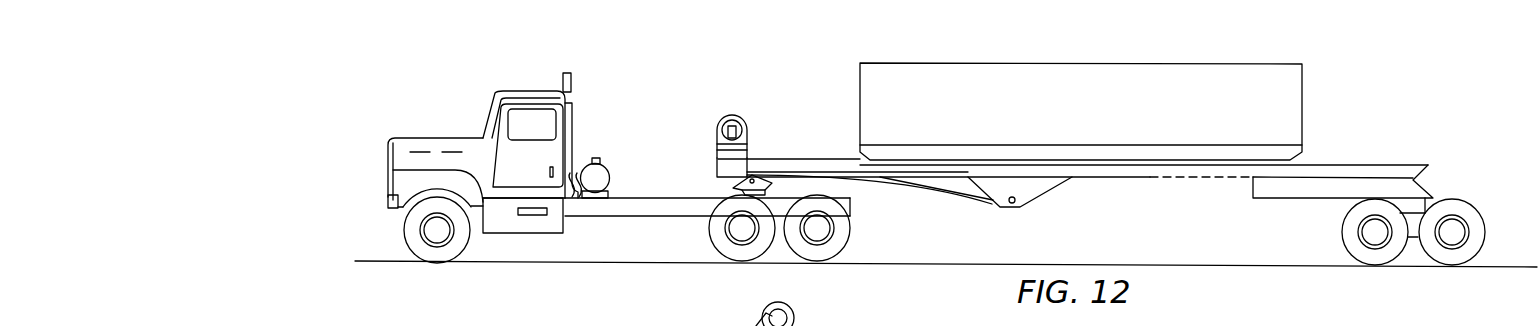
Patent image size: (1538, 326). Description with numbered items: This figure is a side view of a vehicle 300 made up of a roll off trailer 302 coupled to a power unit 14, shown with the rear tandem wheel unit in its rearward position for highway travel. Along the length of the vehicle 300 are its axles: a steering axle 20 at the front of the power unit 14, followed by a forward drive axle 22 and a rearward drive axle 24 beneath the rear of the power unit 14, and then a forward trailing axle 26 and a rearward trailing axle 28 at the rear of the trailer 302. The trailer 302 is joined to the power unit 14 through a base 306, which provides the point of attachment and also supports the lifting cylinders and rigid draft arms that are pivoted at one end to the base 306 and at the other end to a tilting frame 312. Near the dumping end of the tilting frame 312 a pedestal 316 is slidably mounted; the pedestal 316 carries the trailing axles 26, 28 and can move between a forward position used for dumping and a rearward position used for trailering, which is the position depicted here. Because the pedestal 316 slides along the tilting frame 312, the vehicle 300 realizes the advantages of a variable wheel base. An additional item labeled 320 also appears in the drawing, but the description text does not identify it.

The power unit 14 is at (579, 121).
The steering axle 20 is at (443, 230).
The forward drive axle 22 is at (742, 228).
The rearward drive axle 24 is at (820, 233).
The forward trailing axle 26 is at (1377, 230).
The rearward trailing axle 28 is at (1453, 235).
The vehicle 300 is at (666, 180).
The roll off trailer 302 is at (1339, 160).
The base 306 is at (735, 180).
The tilting frame 312 is at (1130, 178).
The pedestal 316 is at (1428, 188).
The roller 320 is at (798, 316).